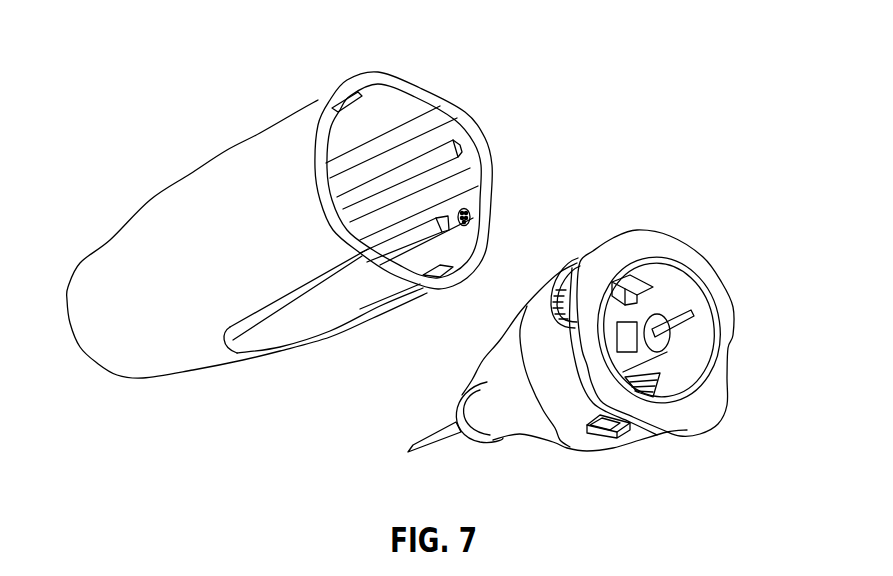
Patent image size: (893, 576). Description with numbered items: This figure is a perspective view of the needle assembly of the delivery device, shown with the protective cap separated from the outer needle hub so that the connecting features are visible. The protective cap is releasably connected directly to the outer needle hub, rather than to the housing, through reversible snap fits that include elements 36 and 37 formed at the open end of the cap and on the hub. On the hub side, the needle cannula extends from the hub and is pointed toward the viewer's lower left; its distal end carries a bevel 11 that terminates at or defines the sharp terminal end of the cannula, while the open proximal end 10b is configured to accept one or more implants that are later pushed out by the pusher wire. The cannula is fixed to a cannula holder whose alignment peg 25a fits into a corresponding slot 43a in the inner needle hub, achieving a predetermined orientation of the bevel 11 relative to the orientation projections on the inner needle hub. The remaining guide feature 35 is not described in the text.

The guide rib 35 is at (420, 162).
The snap fit element 37 is at (424, 224).
The snap fit element 36 is at (471, 215).
The alignment peg 25a is at (632, 333).
The open proximal end 10b is at (690, 307).
The slot 43a is at (640, 353).
The bevel 11 is at (420, 443).